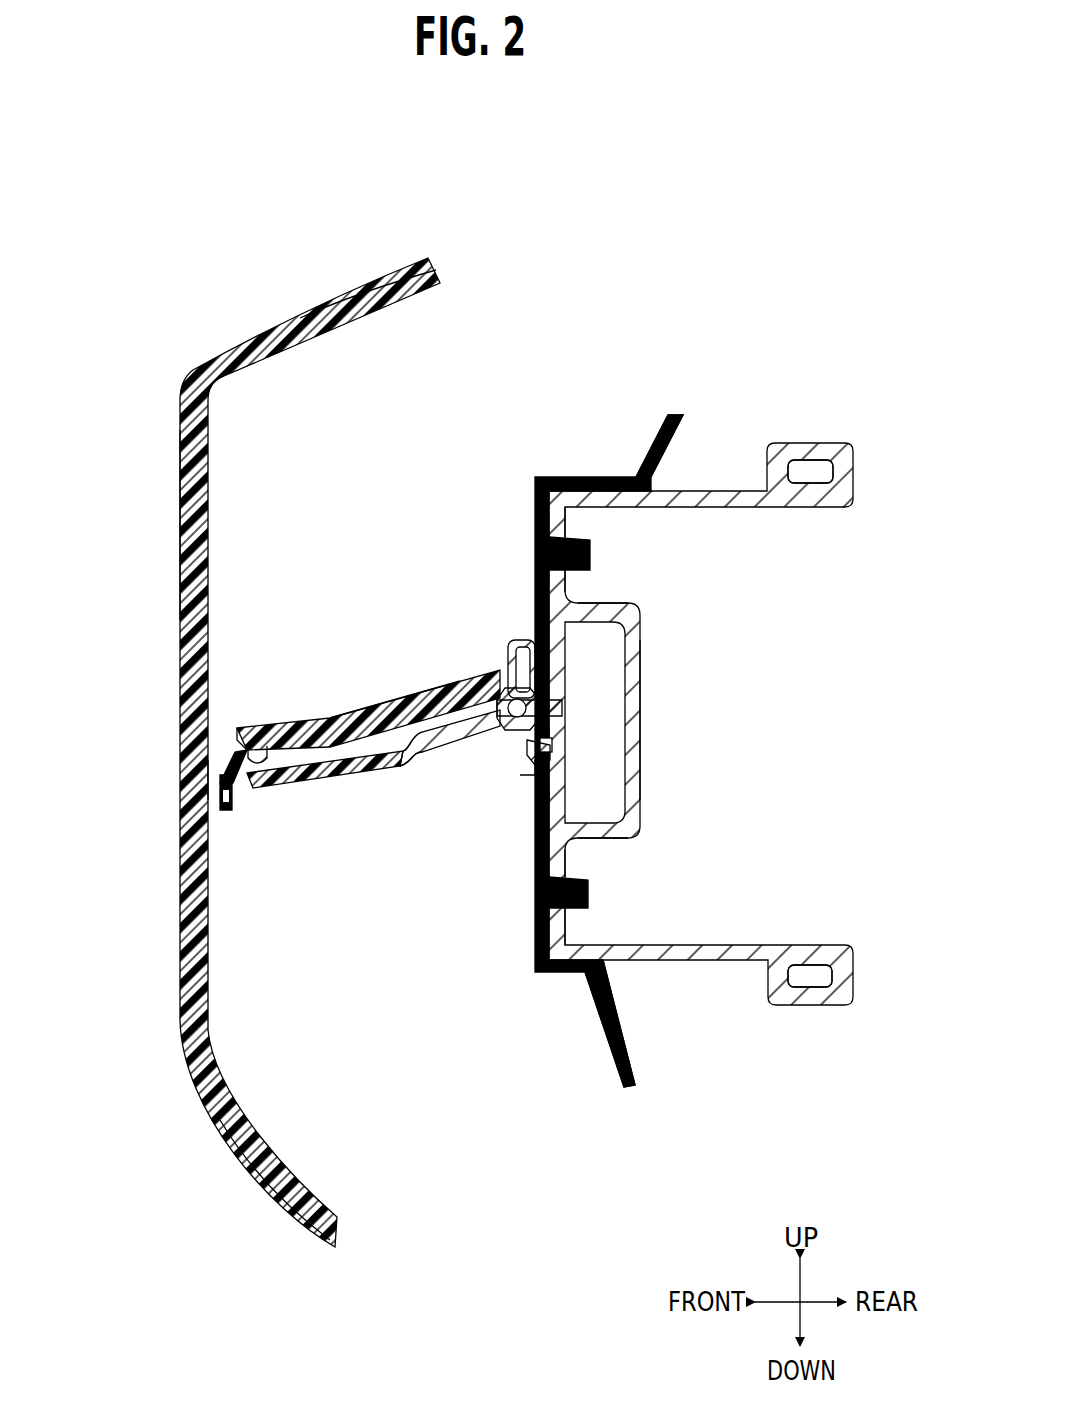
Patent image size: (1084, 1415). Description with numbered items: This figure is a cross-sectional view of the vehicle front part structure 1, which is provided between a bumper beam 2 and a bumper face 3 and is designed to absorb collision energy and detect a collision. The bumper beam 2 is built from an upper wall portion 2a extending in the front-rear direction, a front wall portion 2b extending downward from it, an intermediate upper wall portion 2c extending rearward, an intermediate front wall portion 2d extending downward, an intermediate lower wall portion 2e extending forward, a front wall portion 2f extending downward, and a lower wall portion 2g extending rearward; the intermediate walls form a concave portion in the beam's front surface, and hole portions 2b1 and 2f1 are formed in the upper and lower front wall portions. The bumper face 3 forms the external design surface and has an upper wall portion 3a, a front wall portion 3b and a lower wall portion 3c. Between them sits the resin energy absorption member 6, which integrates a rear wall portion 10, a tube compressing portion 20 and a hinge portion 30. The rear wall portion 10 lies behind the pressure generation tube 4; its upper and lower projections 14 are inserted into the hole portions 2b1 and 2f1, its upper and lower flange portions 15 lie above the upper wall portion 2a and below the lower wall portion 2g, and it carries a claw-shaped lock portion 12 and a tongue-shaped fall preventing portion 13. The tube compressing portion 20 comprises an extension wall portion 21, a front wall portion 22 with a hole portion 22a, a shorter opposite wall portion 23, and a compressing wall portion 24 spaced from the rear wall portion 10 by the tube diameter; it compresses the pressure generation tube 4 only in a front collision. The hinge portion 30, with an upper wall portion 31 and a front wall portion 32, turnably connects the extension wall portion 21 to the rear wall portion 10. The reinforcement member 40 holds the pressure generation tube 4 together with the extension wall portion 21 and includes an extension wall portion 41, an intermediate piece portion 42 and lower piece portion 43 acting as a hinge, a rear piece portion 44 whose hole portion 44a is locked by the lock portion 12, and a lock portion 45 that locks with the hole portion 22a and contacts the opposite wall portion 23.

The vehicle front part structure 1 is at (555, 193).
The bumper beam 2 is at (642, 740).
The upper wall portion 2a is at (760, 510).
The front wall portion 2b is at (566, 580).
The hole portion 2b1 is at (585, 545).
The intermediate upper wall portion 2c is at (600, 610).
The intermediate front wall portion 2d is at (642, 690).
The intermediate lower wall portion 2e is at (605, 840).
The front wall portion 2f is at (568, 862).
The hole portion 2f1 is at (566, 920).
The lower wall portion 2g is at (790, 945).
The bumper face 3 is at (262, 322).
The upper wall portion 3a is at (378, 298).
The front wall portion 3b is at (180, 500).
The lower wall portion 3c is at (262, 1210).
The pressure generation tube 4 is at (522, 688).
The energy absorption member 6 is at (425, 690).
The rear wall portion 10 is at (535, 478).
The lock portion 12 is at (560, 735).
The fall preventing portion 13 is at (560, 805).
The projection 14 is at (590, 556).
The flange portion 15 is at (578, 480).
The tube compressing portion 20 is at (291, 729).
The extension wall portion 21 is at (352, 718).
The front wall portion 22 is at (232, 812).
The hole portion 22a is at (238, 732).
The opposite wall portion 23 is at (266, 758).
The compressing wall portion 24 is at (484, 760).
The hinge portion 30 is at (467, 640).
The upper wall portion 31 is at (503, 627).
The front wall portion 32 is at (505, 700).
The reinforcement member 40 is at (325, 841).
The extension wall portion 41 is at (352, 790).
The intermediate piece portion 42 is at (510, 762).
The lower piece portion 43 is at (528, 776).
The rear piece portion 44 is at (532, 703).
The hole portion 44a is at (552, 745).
The lock portion 45 is at (215, 772).